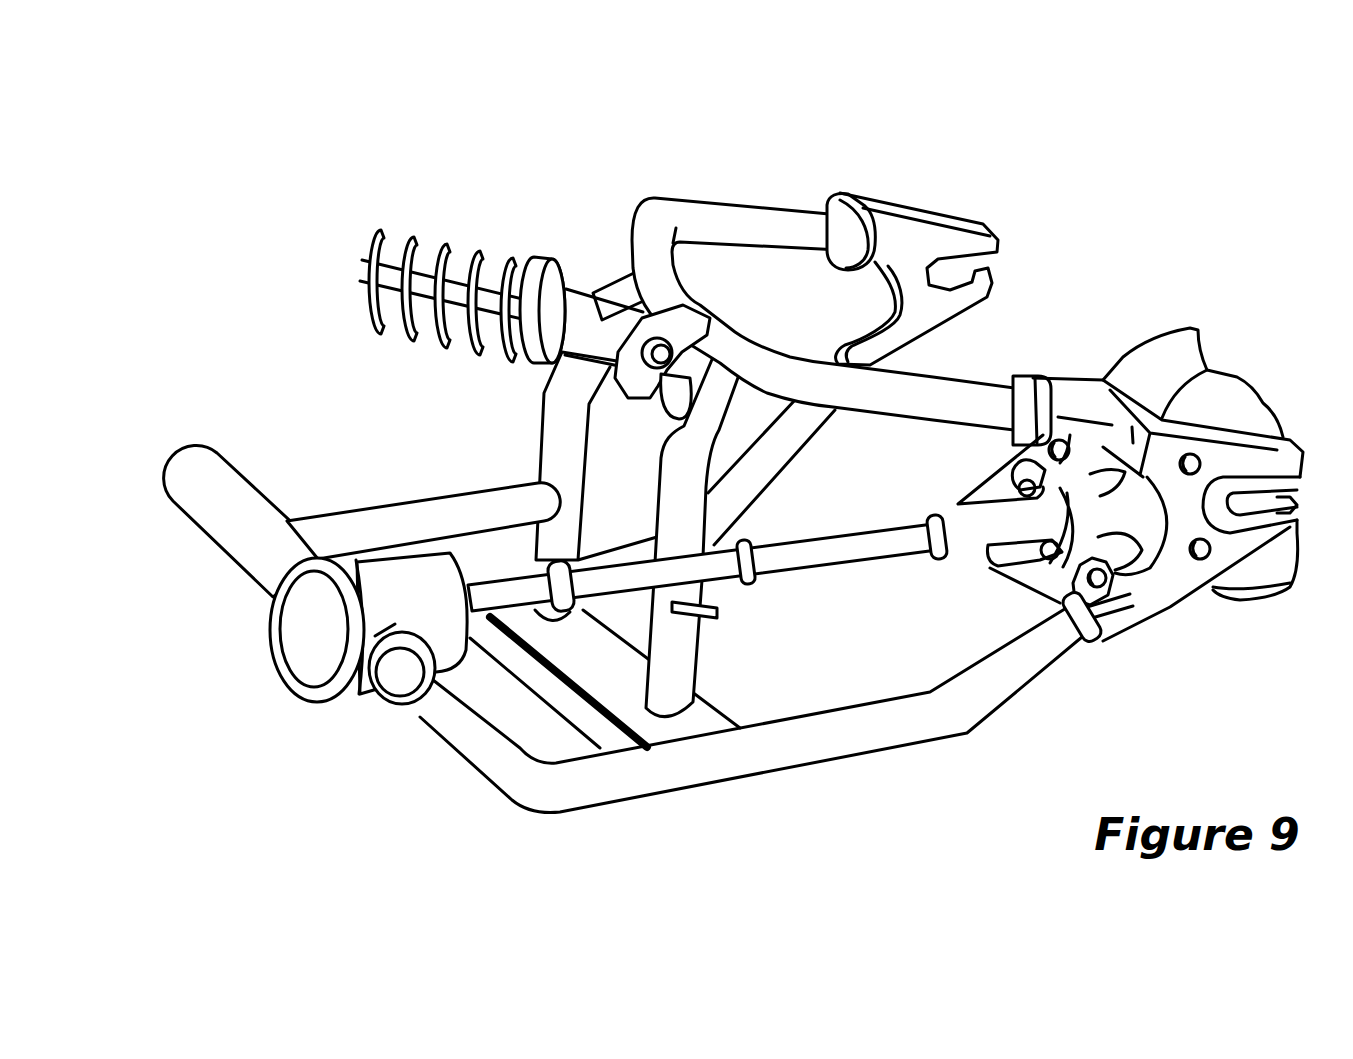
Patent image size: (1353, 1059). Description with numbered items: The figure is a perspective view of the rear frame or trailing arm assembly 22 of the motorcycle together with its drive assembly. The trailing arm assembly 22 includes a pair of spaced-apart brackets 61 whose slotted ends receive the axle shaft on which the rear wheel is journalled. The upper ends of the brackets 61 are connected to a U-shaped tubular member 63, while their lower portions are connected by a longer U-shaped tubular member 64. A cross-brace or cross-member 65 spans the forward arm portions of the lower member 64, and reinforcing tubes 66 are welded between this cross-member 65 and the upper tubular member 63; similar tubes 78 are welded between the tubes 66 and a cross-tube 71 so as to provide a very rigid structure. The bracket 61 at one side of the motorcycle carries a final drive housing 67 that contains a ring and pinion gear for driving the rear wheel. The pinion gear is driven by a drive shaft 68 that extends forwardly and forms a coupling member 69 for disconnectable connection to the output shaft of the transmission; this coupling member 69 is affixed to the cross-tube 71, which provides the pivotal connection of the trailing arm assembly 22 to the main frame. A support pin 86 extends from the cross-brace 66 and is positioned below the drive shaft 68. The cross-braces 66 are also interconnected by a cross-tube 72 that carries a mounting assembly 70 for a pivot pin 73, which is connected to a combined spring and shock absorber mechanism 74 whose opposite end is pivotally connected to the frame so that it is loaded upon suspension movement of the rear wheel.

The trailing arm assembly 22 is at (748, 184).
The bracket 61 is at (910, 210).
The U-shaped tubular member 63 is at (983, 361).
The U-shaped tubular member 64 is at (753, 488).
The cross-member 65 is at (707, 715).
The reinforcing tube 66 is at (754, 595).
The final drive housing 67 is at (1122, 541).
The drive shaft 68 is at (537, 597).
The coupling member 69 is at (378, 573).
The mounting assembly 70 is at (657, 328).
The cross-tube 71 is at (232, 477).
The cross-tube 72 is at (680, 398).
The pivot pin 73 is at (661, 352).
The combined spring and shock absorber mechanism 74 is at (460, 232).
The tube 78 is at (455, 505).
The support pin 86 is at (722, 611).